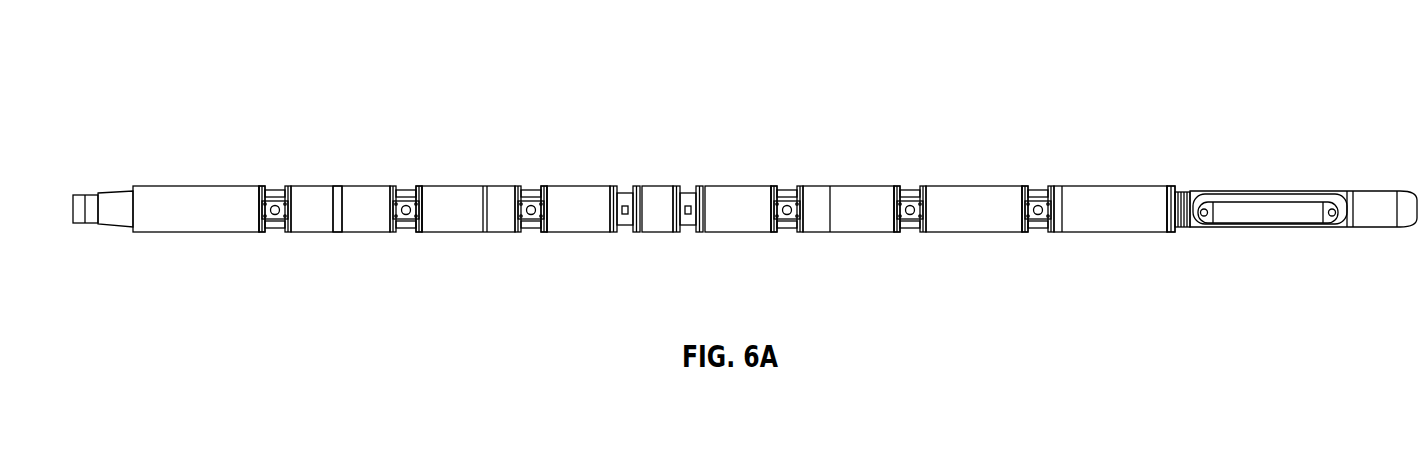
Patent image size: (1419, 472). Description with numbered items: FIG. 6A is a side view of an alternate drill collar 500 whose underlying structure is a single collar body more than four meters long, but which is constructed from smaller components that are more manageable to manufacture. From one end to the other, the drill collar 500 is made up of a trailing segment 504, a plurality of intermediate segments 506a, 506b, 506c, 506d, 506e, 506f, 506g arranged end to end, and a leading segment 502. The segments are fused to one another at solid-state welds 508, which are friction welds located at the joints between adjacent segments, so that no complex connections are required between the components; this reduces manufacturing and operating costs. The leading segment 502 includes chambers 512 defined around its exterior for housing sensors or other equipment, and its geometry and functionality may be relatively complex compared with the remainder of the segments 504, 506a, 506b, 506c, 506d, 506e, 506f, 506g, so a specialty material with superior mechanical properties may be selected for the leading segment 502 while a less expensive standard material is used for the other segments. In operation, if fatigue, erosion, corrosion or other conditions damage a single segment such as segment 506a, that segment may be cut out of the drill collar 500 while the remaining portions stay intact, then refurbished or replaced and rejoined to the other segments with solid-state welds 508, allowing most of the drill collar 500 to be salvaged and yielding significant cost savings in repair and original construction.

The alternate drill collar 500 is at (1320, 61).
The leading segment 502 is at (1372, 191).
The trailing segment 504 is at (150, 186).
The intermediate segment 506a is at (307, 186).
The intermediate segment 506b is at (405, 190).
The intermediate segment 506c is at (462, 186).
The intermediate segment 506d is at (652, 186).
The intermediate segment 506e is at (822, 186).
The intermediate segment 506f is at (980, 186).
The intermediate segment 506g is at (1100, 186).
The solid-state welds 508 is at (252, 245).
The chambers 512 is at (1272, 214).